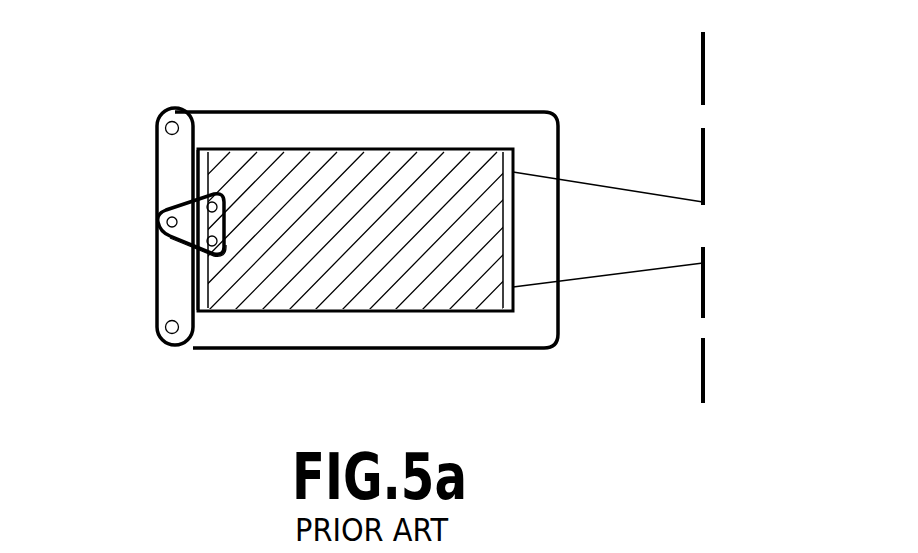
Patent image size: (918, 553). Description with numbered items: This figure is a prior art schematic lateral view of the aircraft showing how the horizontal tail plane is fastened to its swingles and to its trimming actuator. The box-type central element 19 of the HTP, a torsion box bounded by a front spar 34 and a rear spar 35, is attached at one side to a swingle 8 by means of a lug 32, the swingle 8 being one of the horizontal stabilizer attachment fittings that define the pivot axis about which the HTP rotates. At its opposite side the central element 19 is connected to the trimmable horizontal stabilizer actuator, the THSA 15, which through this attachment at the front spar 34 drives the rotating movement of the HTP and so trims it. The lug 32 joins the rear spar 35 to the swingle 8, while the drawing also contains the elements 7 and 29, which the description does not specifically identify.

The housing 7 is at (274, 111).
The swingle 8 is at (172, 145).
The mounting bracket 29 is at (160, 220).
The lug 32 is at (185, 236).
The box-type central element 19 is at (357, 282).
The rear spar 35 is at (203, 270).
The front spar 34 is at (507, 243).
The trimmable horizontal stabilizer actuator (THSA) 15 is at (706, 85).